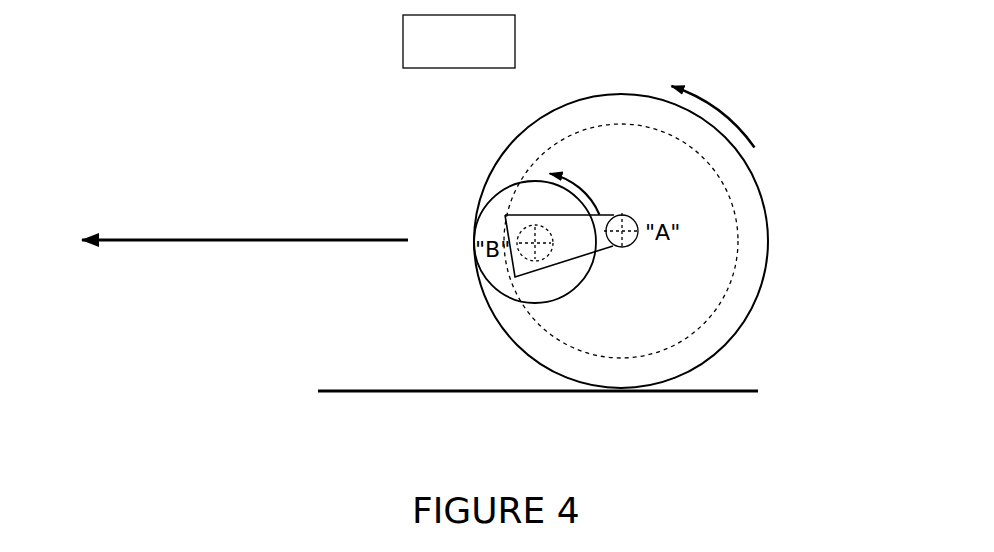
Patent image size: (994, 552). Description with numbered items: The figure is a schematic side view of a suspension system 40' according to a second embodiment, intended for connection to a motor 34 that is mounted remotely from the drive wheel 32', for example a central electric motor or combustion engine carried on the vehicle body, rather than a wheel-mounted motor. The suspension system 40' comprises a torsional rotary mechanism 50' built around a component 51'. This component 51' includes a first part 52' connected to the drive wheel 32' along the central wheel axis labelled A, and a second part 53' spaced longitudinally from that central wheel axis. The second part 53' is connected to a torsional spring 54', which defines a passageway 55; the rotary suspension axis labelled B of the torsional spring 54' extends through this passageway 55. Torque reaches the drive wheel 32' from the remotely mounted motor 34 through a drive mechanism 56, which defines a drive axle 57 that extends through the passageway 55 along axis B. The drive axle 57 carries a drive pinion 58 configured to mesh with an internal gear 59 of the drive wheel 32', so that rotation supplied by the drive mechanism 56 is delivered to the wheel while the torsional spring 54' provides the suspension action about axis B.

The suspension system 40' is at (320, 127).
The drive wheel 32' is at (671, 241).
The internal gear 59 is at (735, 201).
The first part 52' is at (616, 145).
The torsional rotary mechanism 50' is at (590, 278).
The component 51' is at (535, 321).
The torsional spring 54' is at (501, 179).
The drive axle 57 is at (541, 228).
The motor 34 is at (520, 218).
The drive mechanism 56 is at (513, 226).
The passageway 55 is at (513, 260).
The second part 53' is at (485, 322).
The drive pinion 58 is at (521, 274).